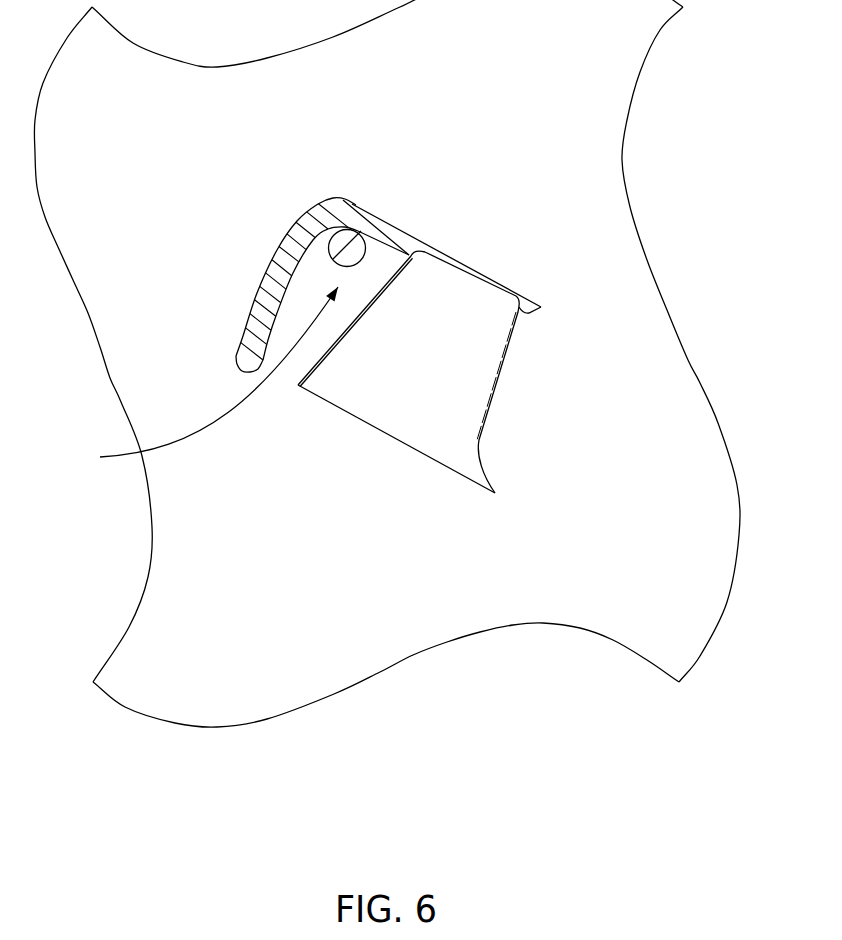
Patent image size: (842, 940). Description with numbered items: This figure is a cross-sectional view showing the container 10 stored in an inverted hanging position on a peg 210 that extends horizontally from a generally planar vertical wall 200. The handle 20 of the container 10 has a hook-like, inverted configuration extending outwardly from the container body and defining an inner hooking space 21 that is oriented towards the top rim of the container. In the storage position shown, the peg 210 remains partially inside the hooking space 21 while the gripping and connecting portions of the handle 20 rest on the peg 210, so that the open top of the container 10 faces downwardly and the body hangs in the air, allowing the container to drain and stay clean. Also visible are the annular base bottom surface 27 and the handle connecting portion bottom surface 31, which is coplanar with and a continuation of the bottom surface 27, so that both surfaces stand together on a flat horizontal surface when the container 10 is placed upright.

The wall 200 is at (570, 158).
The handle 20 is at (278, 279).
The inner hooking space 21 is at (206, 379).
The peg 210 is at (350, 242).
The bottom surface of base connection portion 31 is at (413, 231).
The bottom surface of annular base 27 is at (479, 265).
The container 10 is at (503, 425).